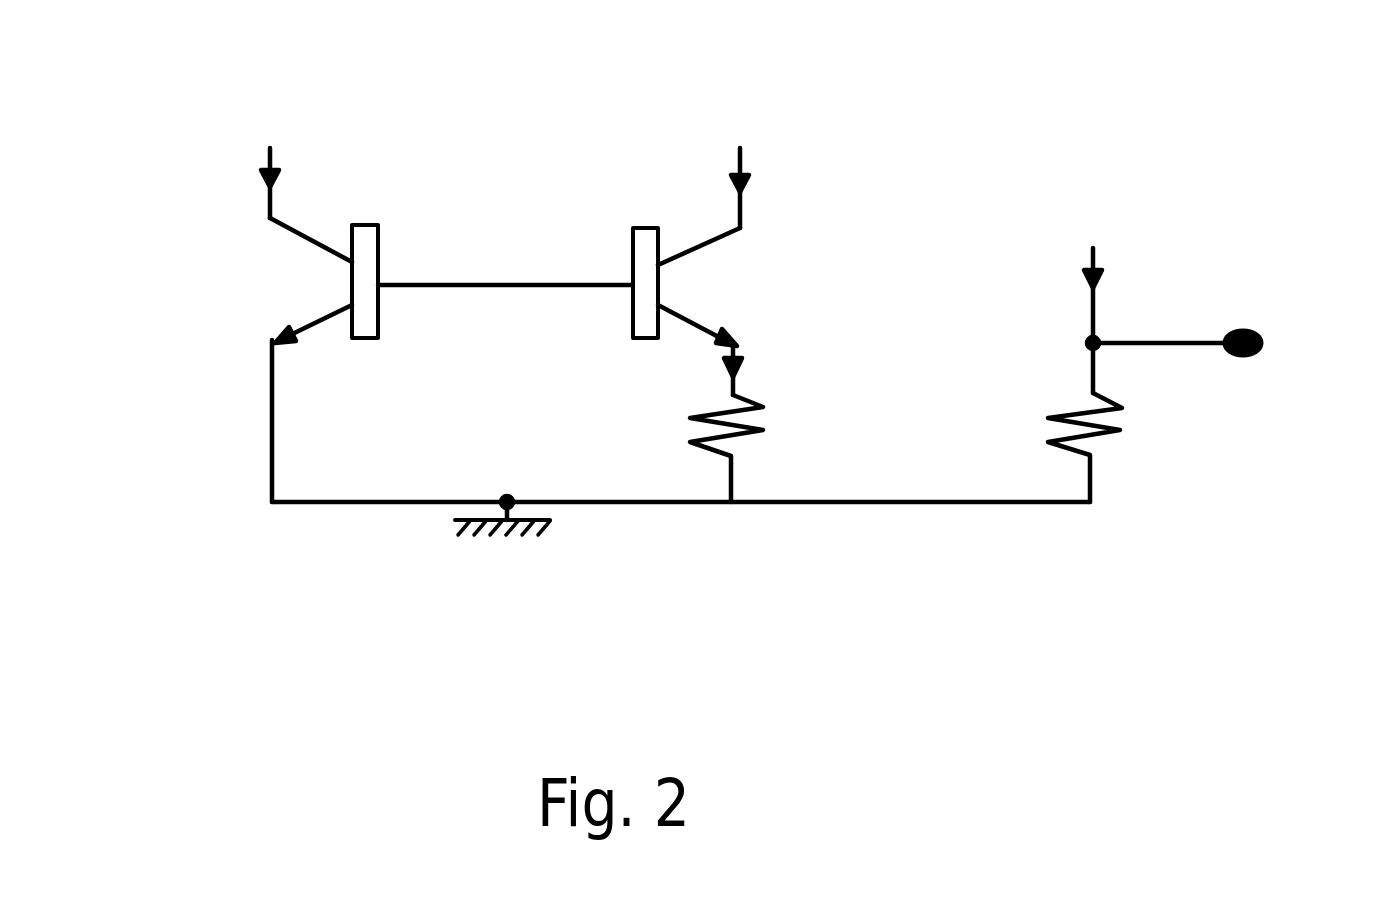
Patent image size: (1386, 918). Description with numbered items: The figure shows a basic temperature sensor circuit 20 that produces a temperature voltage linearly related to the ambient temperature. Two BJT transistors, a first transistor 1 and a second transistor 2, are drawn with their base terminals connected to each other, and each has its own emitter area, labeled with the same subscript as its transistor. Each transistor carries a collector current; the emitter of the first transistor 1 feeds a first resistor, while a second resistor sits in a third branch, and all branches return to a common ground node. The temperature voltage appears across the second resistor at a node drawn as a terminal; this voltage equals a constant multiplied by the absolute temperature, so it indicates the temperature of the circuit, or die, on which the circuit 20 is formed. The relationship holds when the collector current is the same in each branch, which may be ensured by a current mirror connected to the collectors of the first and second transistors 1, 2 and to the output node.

The basic temperature sensor circuit 20 is at (352, 102).
The transistor Q1 1 is at (774, 247).
The transistor Q2 2 is at (226, 245).